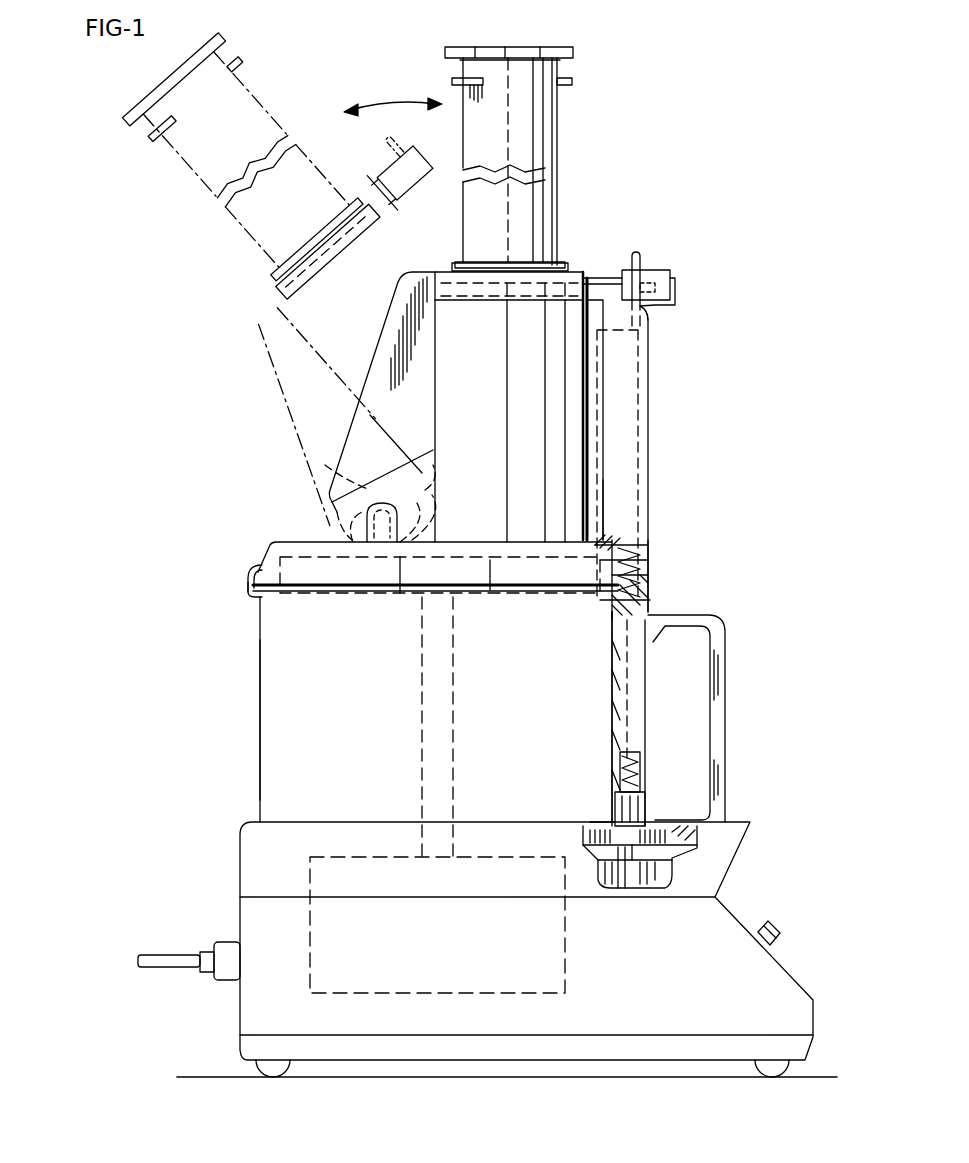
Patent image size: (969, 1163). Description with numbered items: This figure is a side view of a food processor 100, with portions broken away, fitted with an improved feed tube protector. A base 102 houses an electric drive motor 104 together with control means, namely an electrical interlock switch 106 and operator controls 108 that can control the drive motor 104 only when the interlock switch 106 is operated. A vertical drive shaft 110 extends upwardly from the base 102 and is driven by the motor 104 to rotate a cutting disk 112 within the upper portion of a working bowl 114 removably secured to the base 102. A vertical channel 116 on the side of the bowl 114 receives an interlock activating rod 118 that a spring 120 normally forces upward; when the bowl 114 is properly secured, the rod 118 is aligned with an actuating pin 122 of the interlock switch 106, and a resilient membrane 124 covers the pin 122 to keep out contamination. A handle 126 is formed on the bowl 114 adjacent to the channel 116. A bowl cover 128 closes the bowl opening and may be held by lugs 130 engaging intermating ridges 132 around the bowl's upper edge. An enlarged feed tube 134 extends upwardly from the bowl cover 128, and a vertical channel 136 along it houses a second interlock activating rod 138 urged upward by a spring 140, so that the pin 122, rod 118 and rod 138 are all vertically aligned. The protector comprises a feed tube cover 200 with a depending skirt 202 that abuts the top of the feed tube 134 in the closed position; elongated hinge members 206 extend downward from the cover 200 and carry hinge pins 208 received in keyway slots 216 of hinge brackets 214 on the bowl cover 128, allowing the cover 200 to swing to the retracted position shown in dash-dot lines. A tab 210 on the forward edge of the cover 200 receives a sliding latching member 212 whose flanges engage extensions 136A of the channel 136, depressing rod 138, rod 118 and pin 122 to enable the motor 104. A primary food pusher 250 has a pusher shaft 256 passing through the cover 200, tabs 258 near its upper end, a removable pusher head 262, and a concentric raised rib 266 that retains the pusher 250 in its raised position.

The food processor 100 is at (244, 711).
The base 102 is at (240, 912).
The electric drive motor 104 is at (565, 930).
The electrical interlock switch 106 is at (632, 884).
The operator controls 108 is at (770, 928).
The vertical drive shaft 110 is at (412, 722).
The cutting disk 112 is at (385, 560).
The working bowl 114 is at (262, 755).
The vertical channel 116 is at (646, 672).
The interlock activating rod 118 is at (633, 752).
The spring 120 is at (645, 790).
The actuating pin 122 is at (668, 857).
The resilient membrane 124 is at (612, 818).
The handle 126 is at (722, 655).
The bowl cover 128 is at (295, 542).
The lugs 130 is at (250, 592).
The ridges 132 is at (250, 570).
The feed tube 134 is at (590, 378).
The vertical channel 136 is at (650, 410).
The extensions 136A is at (660, 312).
The second interlock activating rod 138 is at (630, 490).
The spring 140 is at (648, 548).
The feed tube cover 200 is at (578, 270).
The skirt 202 is at (483, 298).
The elongated hinge members 206 is at (392, 340).
The hinge pins 208 is at (425, 483).
The tab 210 is at (680, 282).
The latching member 212 is at (658, 262).
The hinge brackets 214 is at (418, 462).
The keyway slots 216 is at (362, 478).
The primary food pusher 250 is at (526, 145).
The pusher shaft 256 is at (556, 115).
The tabs 258 is at (455, 78).
The pusher head 262 is at (573, 48).
The raised rib 266 is at (460, 268).